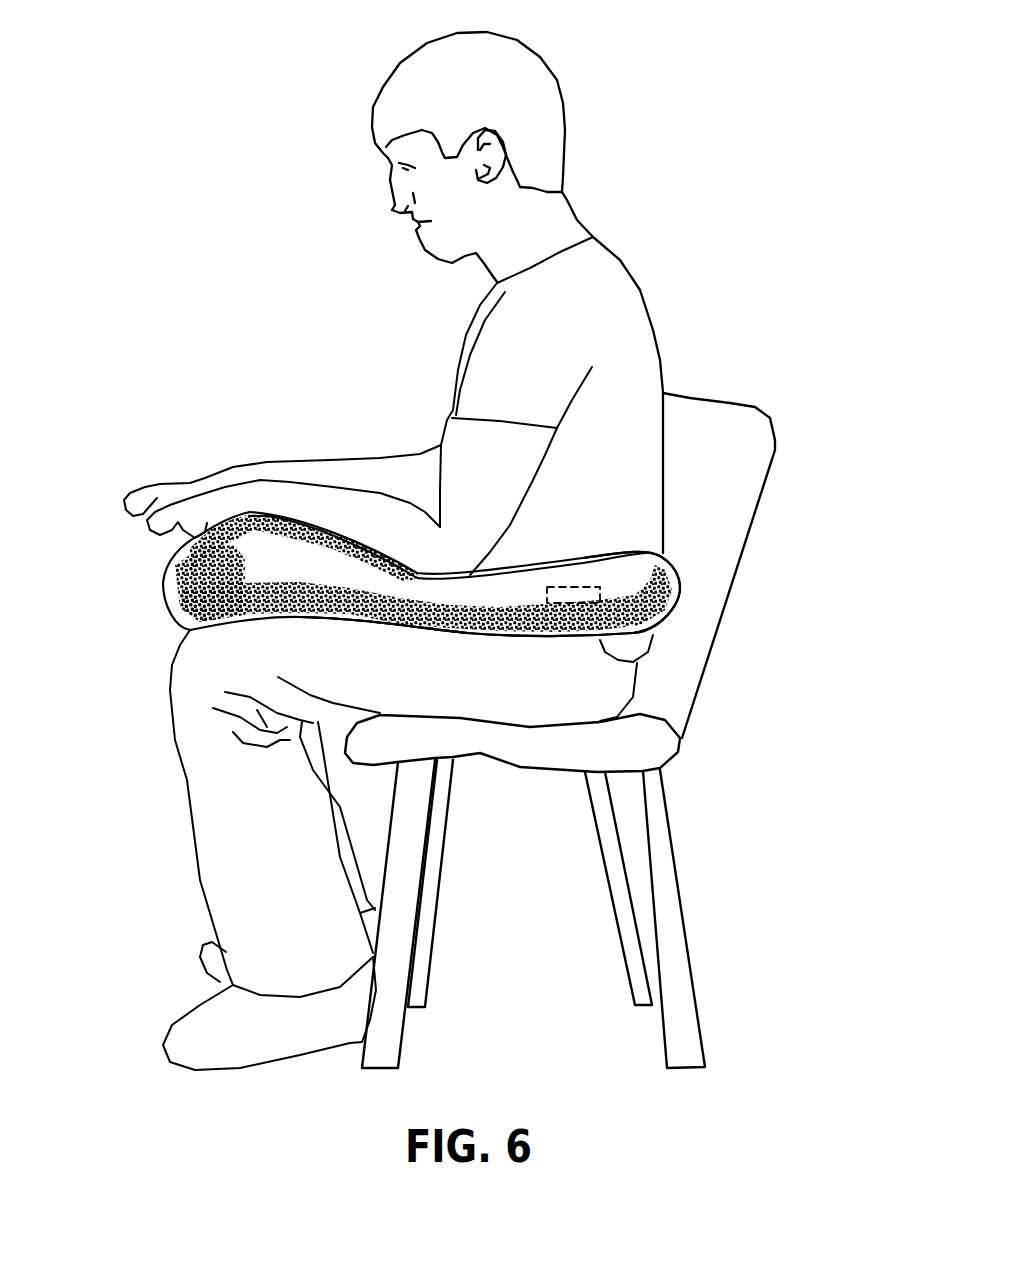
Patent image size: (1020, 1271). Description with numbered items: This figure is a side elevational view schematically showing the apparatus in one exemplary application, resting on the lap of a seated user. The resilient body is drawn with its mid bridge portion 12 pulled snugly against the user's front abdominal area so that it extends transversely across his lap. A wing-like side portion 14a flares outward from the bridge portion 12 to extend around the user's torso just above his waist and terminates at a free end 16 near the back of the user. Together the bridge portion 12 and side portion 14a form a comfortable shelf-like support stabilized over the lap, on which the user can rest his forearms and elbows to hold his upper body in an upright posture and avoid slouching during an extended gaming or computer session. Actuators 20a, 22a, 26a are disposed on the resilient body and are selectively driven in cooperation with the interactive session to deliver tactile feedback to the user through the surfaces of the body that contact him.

The bridge portion 12 is at (382, 576).
The side portion 14a is at (427, 630).
The free end 16 is at (698, 592).
The actuator 20a is at (590, 528).
The actuator 22a is at (448, 507).
The actuator 26a is at (383, 655).